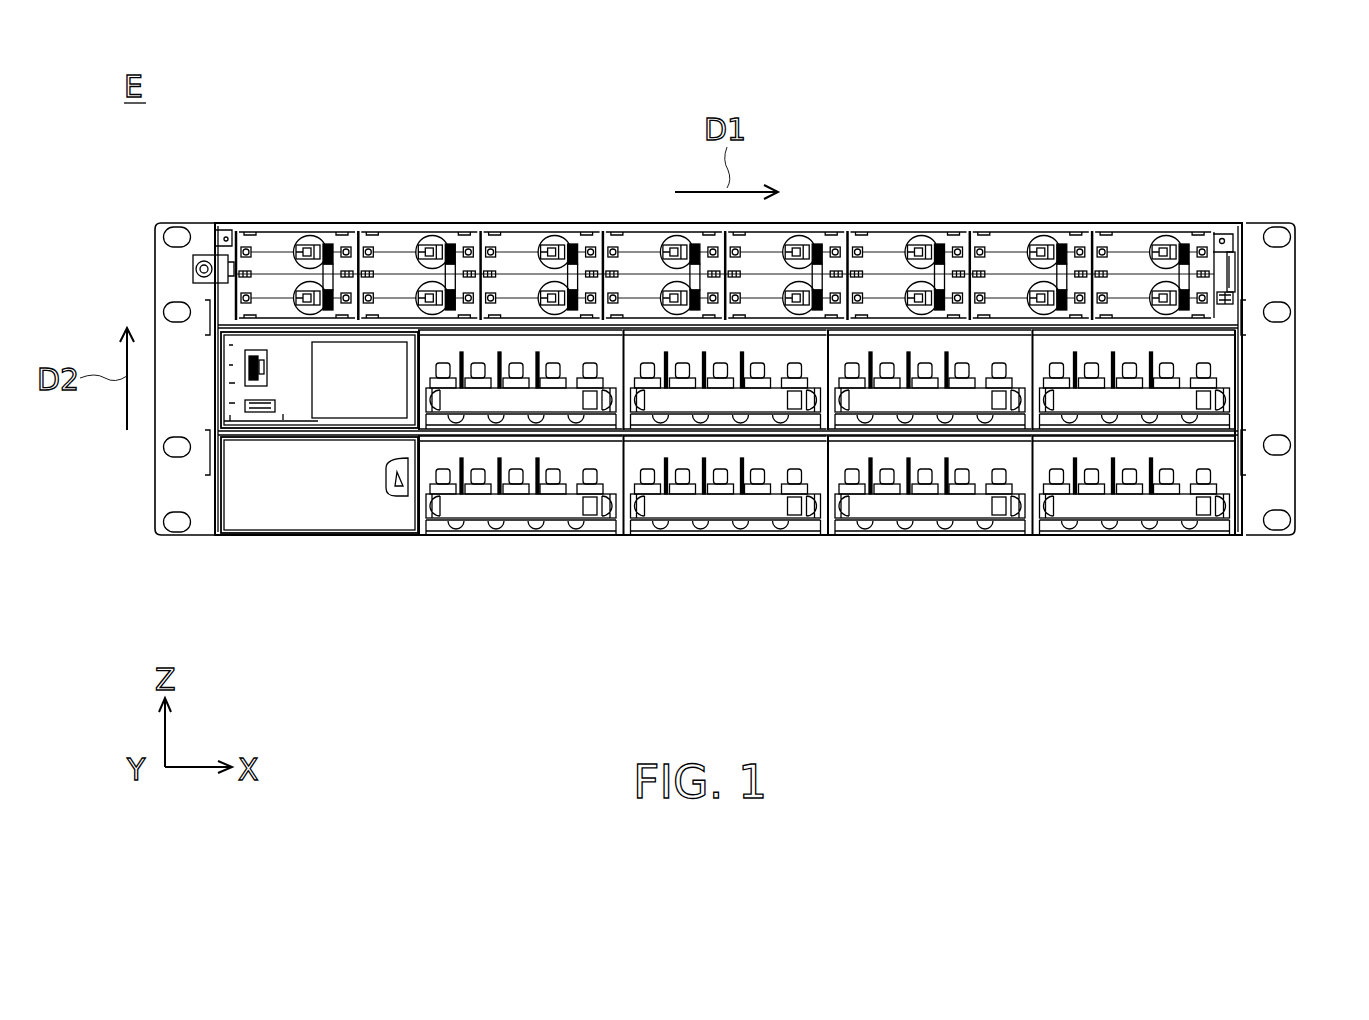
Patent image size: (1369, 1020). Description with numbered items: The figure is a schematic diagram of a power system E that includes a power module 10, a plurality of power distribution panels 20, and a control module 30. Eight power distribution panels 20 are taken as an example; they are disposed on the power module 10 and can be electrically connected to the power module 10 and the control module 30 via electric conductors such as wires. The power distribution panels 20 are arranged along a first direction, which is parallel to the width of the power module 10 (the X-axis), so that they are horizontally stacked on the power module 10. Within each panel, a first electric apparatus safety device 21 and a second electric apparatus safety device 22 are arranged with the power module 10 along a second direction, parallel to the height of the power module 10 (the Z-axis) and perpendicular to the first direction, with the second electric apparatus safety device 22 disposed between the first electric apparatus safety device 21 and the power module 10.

The power module 10 is at (906, 500).
The power distribution panel 20 is at (1039, 207).
The first electric apparatus safety device 21 is at (1206, 266).
The second electric apparatus safety device 22 is at (1206, 286).
The control module 30 is at (300, 398).